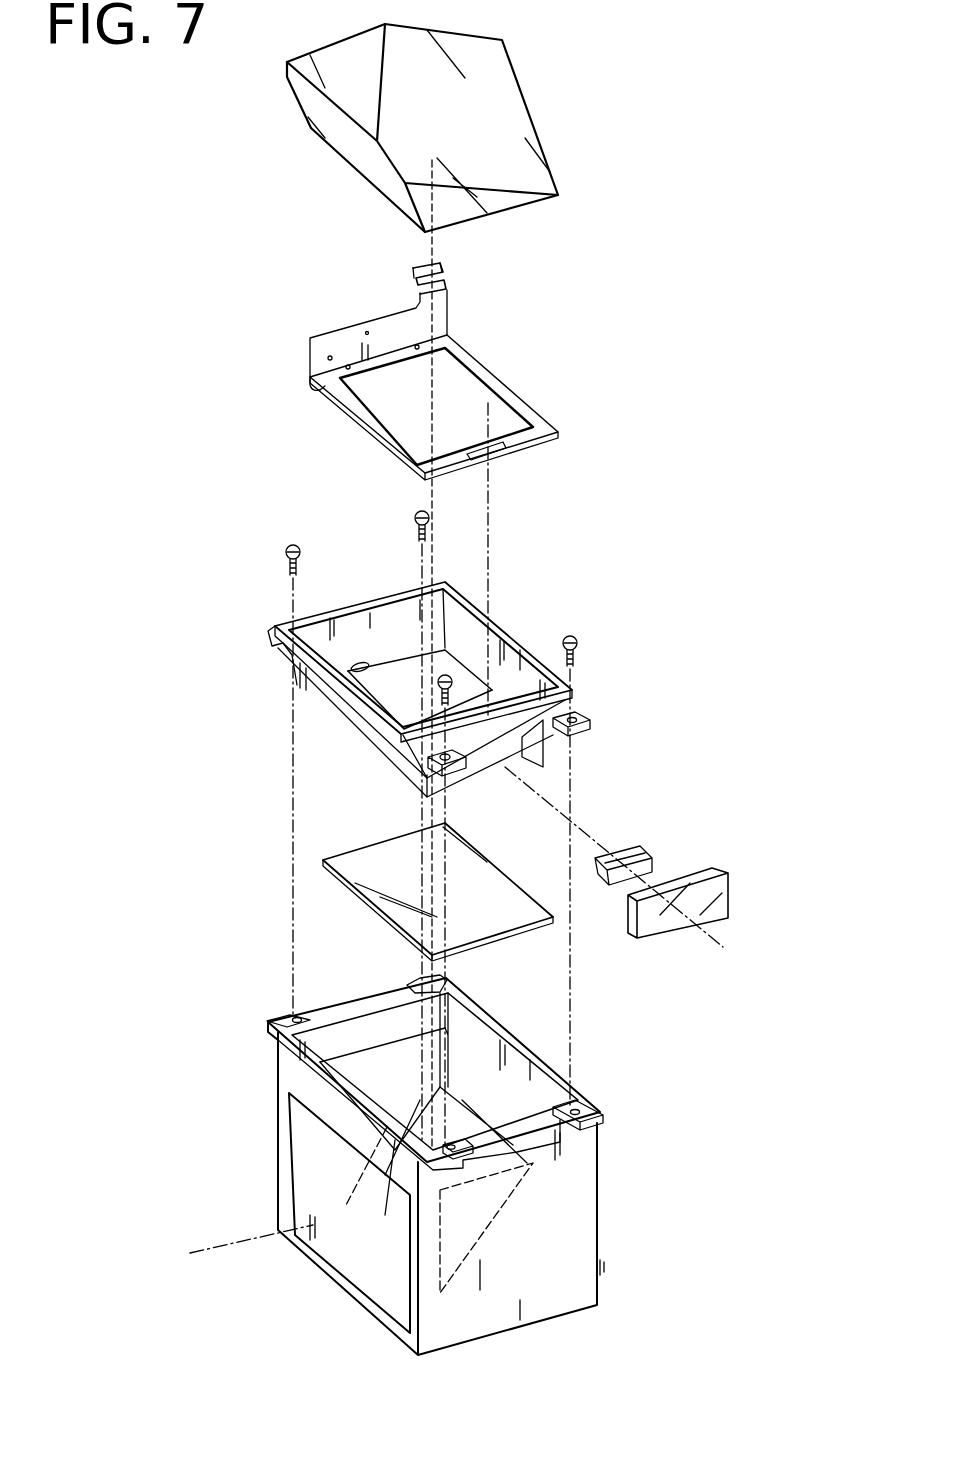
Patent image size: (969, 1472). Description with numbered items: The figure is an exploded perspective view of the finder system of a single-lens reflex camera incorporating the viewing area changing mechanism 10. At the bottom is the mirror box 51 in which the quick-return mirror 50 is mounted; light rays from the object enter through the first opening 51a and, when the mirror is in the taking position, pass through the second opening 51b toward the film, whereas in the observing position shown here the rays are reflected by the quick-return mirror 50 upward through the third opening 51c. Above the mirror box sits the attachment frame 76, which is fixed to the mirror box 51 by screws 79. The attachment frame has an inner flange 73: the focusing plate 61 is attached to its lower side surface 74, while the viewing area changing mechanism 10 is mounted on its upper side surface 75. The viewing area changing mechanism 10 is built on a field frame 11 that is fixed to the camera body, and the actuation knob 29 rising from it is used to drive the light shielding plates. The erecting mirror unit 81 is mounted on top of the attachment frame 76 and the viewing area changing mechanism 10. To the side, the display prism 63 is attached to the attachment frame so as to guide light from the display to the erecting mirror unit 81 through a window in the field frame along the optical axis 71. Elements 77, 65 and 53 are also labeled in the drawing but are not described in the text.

The erecting mirror unit 81 is at (517, 122).
The actuation knob 29 is at (413, 270).
The viewing area changing mechanism 10 is at (506, 369).
The field frame 11 is at (547, 418).
The screws 79 is at (417, 514).
The optical axis 71 is at (500, 562).
The attachment frame 76 is at (356, 626).
The upper side surface 75 is at (408, 643).
The inner flange 73 is at (347, 669).
The lower side surface 74 is at (380, 677).
The boss 77 is at (483, 768).
The focusing plate 61 is at (387, 853).
The block 65 is at (637, 849).
The display prism 63 is at (658, 928).
The mirror box 51 is at (582, 1249).
The mounting ear 53 is at (280, 1018).
The third opening 51c is at (403, 1077).
The second opening 51b is at (497, 1110).
The quick-return mirror 50 is at (370, 1184).
The first opening 51a is at (373, 1273).